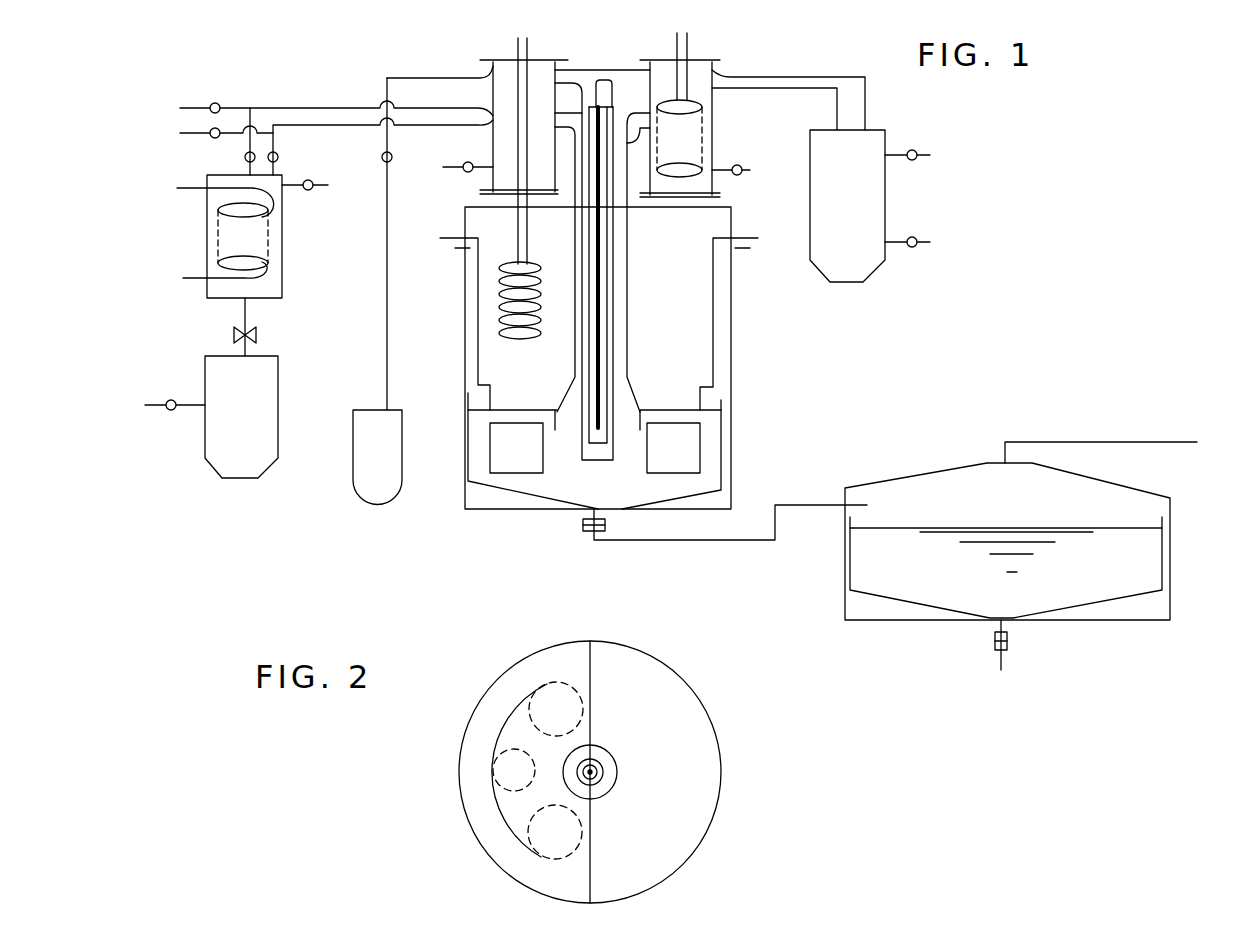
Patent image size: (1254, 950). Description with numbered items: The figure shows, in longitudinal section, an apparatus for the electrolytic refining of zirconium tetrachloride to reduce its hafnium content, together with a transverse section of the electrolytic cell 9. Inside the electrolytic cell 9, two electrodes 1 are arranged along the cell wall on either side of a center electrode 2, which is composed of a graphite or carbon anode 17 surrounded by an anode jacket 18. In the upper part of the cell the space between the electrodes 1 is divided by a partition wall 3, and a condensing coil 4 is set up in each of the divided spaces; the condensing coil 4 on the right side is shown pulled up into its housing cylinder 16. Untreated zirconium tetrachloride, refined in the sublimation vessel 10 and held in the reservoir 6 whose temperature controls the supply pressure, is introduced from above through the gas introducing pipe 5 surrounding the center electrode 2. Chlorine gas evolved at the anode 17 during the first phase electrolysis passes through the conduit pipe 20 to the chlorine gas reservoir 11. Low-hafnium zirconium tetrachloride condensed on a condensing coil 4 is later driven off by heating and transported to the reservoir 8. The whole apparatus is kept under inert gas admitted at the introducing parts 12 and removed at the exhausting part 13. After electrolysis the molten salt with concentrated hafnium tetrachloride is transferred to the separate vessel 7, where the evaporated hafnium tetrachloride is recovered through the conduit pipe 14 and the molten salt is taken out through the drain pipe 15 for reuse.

In FIG. 1, the electrode 1 is at (478, 352).
In FIG. 2, the electrode 1 is at (503, 717).
In FIG. 1, the center electrode 2 is at (617, 352).
In FIG. 1, the partition wall 3 is at (607, 230).
In FIG. 2, the partition wall 3 is at (597, 677).
In FIG. 1, the condensing coil 4 is at (528, 46).
In FIG. 2, the condensing coil 4 is at (560, 682).
In FIG. 2, the gas introducing pipe 5 is at (612, 752).
In FIG. 1, the reservoir 6 is at (207, 235).
In FIG. 1, the separate vessel 7 is at (985, 493).
In FIG. 1, the reservoir 8 is at (885, 197).
In FIG. 1, the electrolytic cell 9 is at (727, 452).
In FIG. 1, the sublimation vessel 10 is at (280, 417).
In FIG. 1, the chlorine gas reservoir 11 is at (402, 487).
In FIG. 1, the introducing part of inert gas 12 is at (541, 256).
In FIG. 1, the exhausting part 13 is at (322, 186).
In FIG. 1, the conduit pipe 14 is at (1119, 448).
In FIG. 1, the drain pipe 15 is at (1004, 663).
In FIG. 1, the housing cylinder 16 is at (490, 63).
In FIG. 1, the anode 17 is at (600, 323).
In FIG. 2, the anode 17 is at (604, 772).
In FIG. 1, the anode jacket 18 is at (607, 290).
In FIG. 2, the anode jacket 18 is at (600, 778).
In FIG. 1, the conduit pipe 20 is at (425, 77).